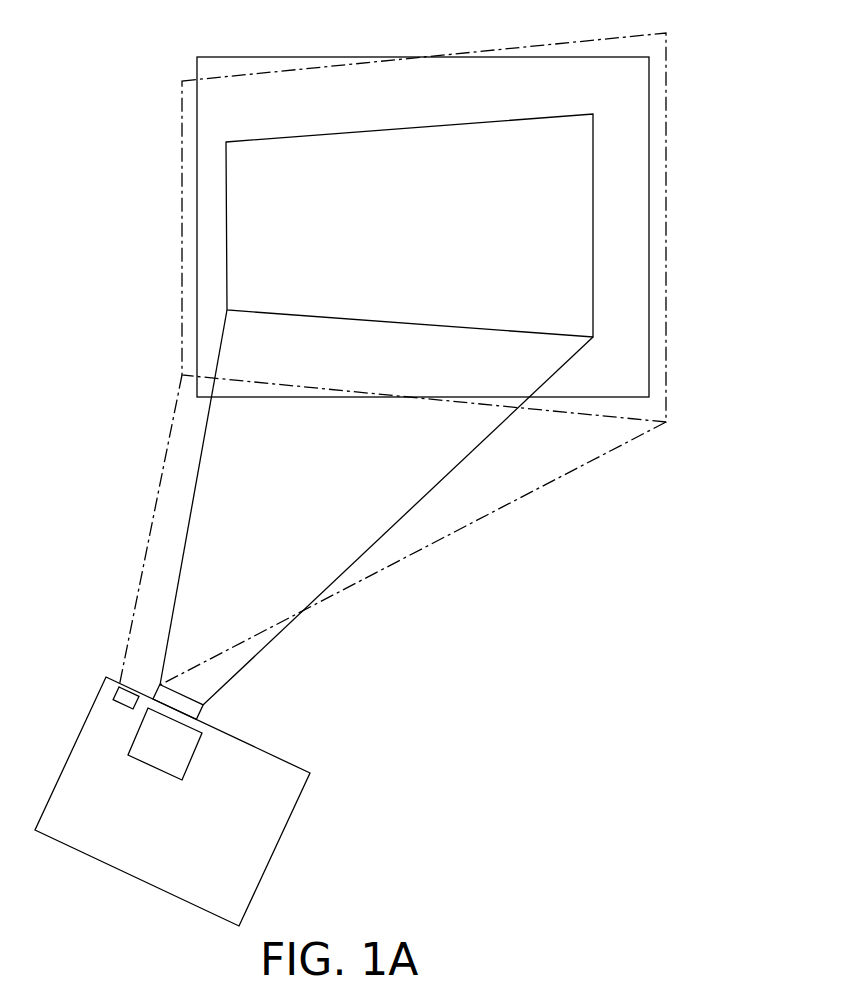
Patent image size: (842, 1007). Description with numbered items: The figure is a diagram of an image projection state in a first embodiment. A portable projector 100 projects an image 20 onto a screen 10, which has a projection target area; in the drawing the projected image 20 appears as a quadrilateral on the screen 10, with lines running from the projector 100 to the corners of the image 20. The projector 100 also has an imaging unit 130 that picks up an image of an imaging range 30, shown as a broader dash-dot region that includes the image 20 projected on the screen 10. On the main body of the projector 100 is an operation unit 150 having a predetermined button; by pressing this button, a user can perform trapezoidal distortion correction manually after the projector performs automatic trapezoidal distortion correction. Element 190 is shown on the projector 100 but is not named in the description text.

The screen 10 is at (257, 57).
The image 20 is at (493, 121).
The imaging range 30 is at (649, 33).
The projector 100 is at (304, 768).
The imaging unit 130 is at (124, 709).
The operation unit 150 is at (188, 768).
The projection lens 190 is at (201, 712).